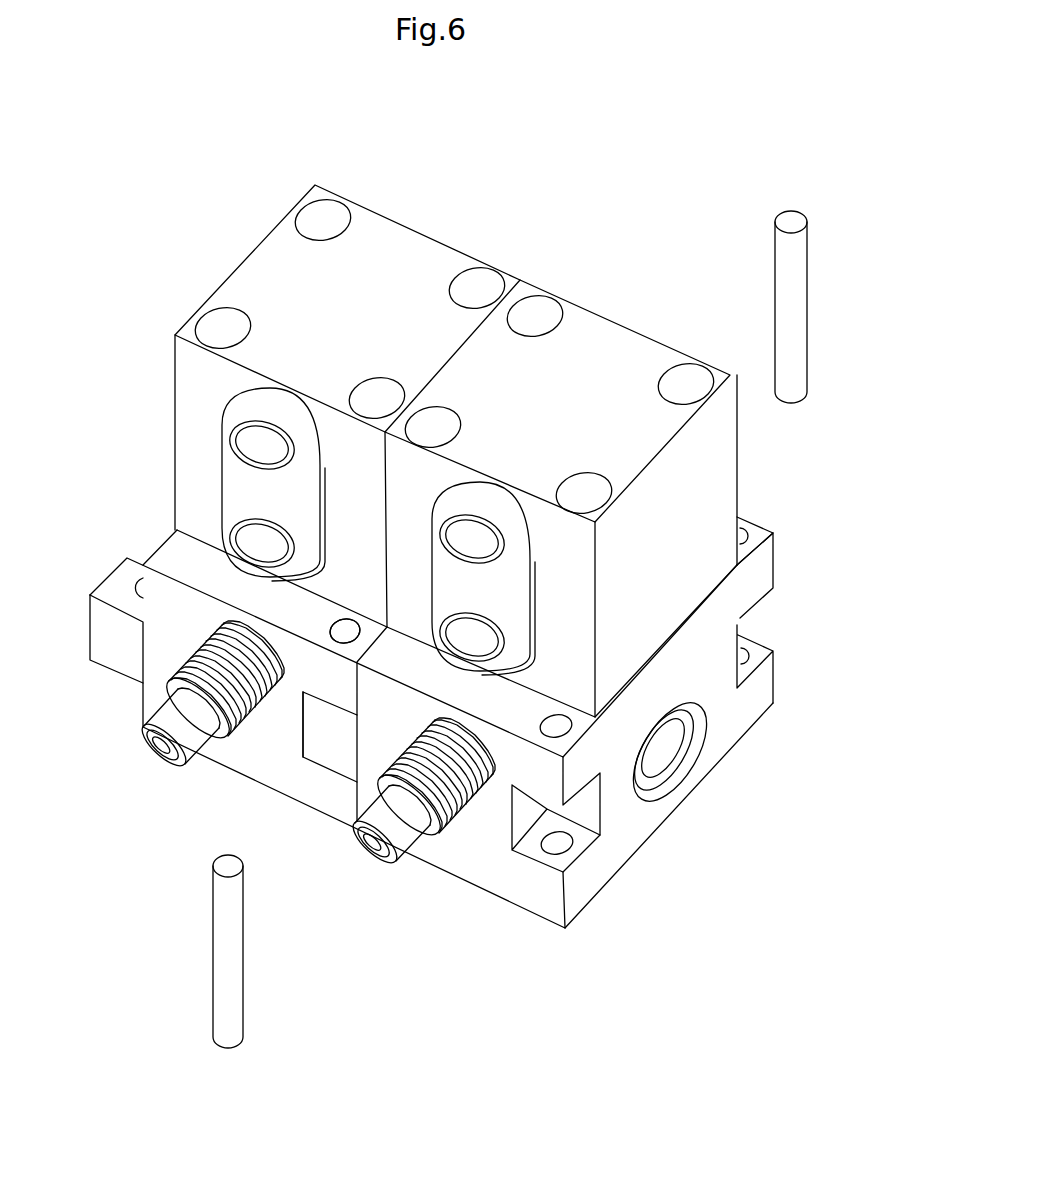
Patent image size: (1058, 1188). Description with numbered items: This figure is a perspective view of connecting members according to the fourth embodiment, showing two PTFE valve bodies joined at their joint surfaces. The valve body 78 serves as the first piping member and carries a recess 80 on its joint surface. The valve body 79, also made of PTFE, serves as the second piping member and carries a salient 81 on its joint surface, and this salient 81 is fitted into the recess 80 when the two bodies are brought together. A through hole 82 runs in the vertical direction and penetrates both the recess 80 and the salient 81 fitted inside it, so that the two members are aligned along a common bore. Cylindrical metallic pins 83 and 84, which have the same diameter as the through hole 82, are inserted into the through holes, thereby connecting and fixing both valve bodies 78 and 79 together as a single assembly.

The valve body 78 is at (177, 612).
The valve body 79 is at (739, 635).
The recess 80 is at (302, 734).
The salient 81 is at (335, 742).
The through hole 82 is at (337, 628).
The cylindrical metallic pin 83 is at (213, 1002).
The cylindrical metallic pin 84 is at (797, 317).